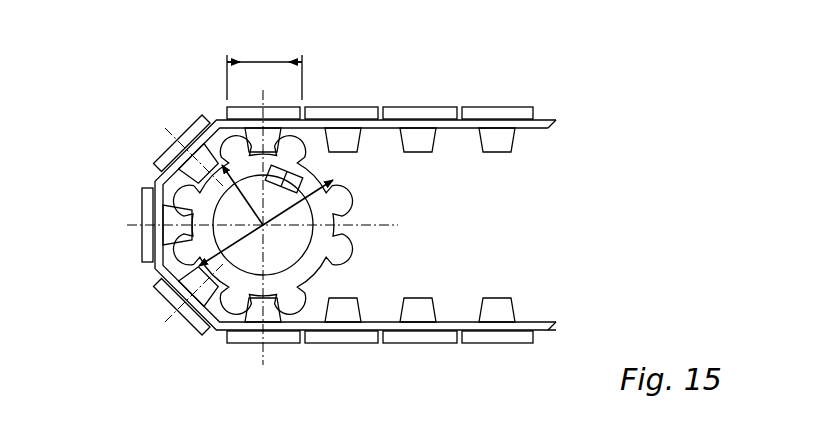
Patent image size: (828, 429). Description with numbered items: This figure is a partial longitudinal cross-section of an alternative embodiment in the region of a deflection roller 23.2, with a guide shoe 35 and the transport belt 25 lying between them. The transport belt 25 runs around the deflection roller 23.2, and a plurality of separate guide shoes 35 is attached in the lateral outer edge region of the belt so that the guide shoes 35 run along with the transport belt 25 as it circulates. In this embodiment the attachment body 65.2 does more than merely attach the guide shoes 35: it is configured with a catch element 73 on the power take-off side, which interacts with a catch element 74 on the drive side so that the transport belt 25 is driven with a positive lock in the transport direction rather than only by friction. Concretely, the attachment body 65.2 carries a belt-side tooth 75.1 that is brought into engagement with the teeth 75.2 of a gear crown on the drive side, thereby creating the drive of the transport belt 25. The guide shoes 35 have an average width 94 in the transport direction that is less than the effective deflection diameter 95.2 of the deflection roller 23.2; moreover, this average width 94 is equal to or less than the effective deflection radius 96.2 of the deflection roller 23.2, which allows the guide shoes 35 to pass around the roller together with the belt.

The deflection roller 23.2 is at (404, 245).
The transport belt 25 is at (539, 126).
The guide shoe 35 is at (190, 91).
The attachment body 65.2 is at (518, 153).
The catch element 73 is at (440, 150).
The catch element 74 is at (366, 185).
The belt-side tooth 75.1 is at (493, 307).
The teeth of gear crown 75.2 is at (296, 300).
The average width of guide shoe 94 is at (257, 62).
The effective deflection diameter 95.2 is at (302, 204).
The effective deflection radius 96.2 is at (243, 198).